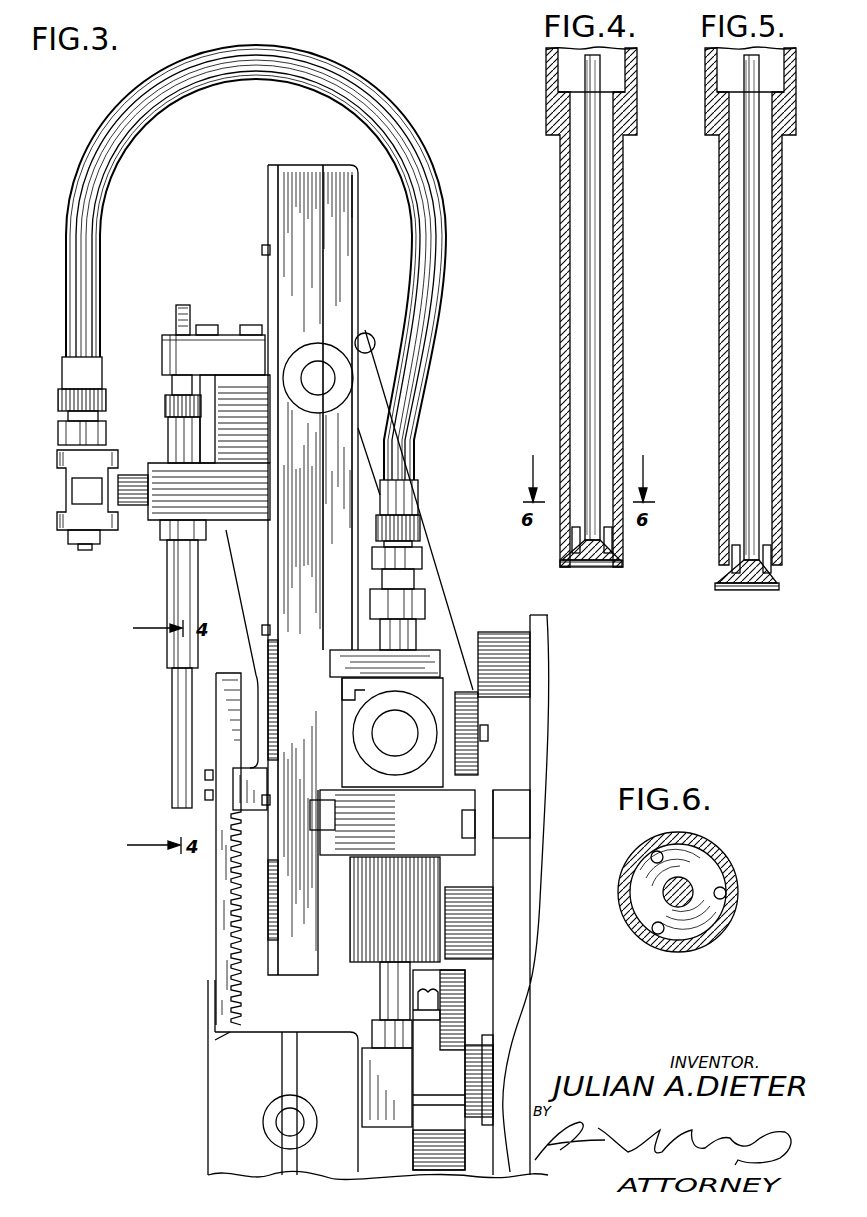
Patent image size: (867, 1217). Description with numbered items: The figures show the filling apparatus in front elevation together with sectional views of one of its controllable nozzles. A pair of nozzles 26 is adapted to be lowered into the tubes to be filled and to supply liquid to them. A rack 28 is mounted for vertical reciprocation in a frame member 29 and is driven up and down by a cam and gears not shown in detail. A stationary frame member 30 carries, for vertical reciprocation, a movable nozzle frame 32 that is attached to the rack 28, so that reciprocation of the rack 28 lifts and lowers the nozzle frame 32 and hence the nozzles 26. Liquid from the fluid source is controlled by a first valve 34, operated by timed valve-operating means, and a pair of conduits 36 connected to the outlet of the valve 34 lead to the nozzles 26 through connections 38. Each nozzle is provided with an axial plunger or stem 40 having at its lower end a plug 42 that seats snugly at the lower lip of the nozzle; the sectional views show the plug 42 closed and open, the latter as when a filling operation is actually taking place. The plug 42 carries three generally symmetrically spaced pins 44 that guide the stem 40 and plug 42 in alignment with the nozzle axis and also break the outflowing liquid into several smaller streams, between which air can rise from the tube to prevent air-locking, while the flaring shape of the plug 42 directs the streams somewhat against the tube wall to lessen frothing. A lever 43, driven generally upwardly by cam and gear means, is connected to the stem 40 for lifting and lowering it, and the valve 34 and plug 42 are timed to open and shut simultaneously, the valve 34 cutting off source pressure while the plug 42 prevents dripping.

In FIG. 3, the nozzle 26 is at (180, 712).
In FIG. 4, the nozzle 26 is at (560, 212).
In FIG. 5, the nozzle 26 is at (719, 212).
In FIG. 6, the nozzle 26 is at (727, 870).
In FIG. 3, the rack 28 is at (220, 920).
In FIG. 3, the frame member 29 is at (253, 1046).
In FIG. 3, the stationary frame member 30 is at (311, 970).
In FIG. 3, the movable nozzle frame 32 is at (248, 577).
In FIG. 3, the first valve 34 is at (425, 713).
In FIG. 3, the conduit 36 is at (95, 296).
In FIG. 3, the connection 38 is at (70, 535).
In FIG. 4, the stem 40 is at (587, 318).
In FIG. 5, the stem 40 is at (746, 318).
In FIG. 6, the stem 40 is at (665, 895).
In FIG. 4, the plug 42 is at (615, 568).
In FIG. 5, the plug 42 is at (750, 590).
In FIG. 6, the plug 42 is at (650, 878).
In FIG. 3, the lever 43 is at (421, 540).
In FIG. 4, the pin 44 is at (575, 540).
In FIG. 5, the pin 44 is at (732, 553).
In FIG. 6, the pin 44 is at (720, 899).